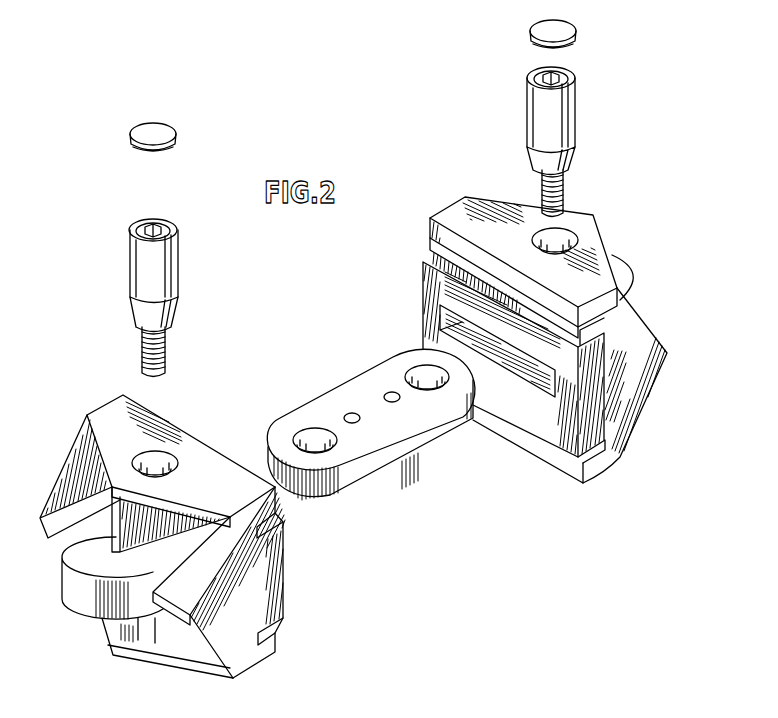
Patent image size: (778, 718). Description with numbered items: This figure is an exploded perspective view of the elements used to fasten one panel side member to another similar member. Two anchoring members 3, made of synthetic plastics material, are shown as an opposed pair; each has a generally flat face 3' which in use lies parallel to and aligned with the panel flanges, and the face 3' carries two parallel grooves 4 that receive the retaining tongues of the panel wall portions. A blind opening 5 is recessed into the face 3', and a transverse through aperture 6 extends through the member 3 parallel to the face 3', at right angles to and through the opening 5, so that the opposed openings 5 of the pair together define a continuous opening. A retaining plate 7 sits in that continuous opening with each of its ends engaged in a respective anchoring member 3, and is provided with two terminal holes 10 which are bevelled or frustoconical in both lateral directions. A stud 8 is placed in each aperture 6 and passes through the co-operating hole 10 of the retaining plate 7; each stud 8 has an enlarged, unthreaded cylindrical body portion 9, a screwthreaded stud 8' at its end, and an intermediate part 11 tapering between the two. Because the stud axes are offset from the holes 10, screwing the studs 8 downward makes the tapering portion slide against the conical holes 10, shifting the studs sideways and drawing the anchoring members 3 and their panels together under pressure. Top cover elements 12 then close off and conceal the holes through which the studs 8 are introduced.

The anchoring member 3 is at (353, 466).
The flat face 3' is at (494, 340).
The parallel grooves 4 is at (597, 437).
The blind opening 5 is at (525, 365).
The transverse through aperture 6 is at (560, 234).
The retaining plate 7 is at (371, 425).
The stud 8 is at (334, 222).
The screwthreaded stud 8' is at (374, 265).
The cylindrical body portion 9 is at (563, 122).
The terminal hole 10 is at (437, 384).
The intermediate part 11 is at (543, 162).
The top cover element 12 is at (543, 32).